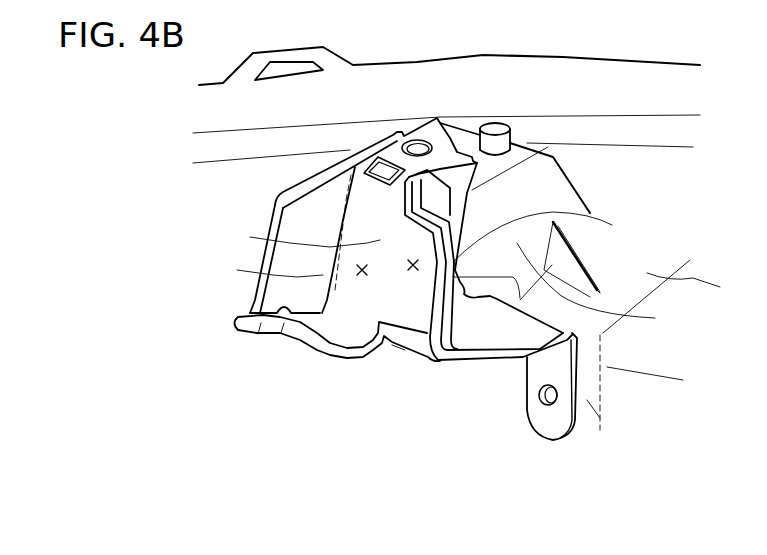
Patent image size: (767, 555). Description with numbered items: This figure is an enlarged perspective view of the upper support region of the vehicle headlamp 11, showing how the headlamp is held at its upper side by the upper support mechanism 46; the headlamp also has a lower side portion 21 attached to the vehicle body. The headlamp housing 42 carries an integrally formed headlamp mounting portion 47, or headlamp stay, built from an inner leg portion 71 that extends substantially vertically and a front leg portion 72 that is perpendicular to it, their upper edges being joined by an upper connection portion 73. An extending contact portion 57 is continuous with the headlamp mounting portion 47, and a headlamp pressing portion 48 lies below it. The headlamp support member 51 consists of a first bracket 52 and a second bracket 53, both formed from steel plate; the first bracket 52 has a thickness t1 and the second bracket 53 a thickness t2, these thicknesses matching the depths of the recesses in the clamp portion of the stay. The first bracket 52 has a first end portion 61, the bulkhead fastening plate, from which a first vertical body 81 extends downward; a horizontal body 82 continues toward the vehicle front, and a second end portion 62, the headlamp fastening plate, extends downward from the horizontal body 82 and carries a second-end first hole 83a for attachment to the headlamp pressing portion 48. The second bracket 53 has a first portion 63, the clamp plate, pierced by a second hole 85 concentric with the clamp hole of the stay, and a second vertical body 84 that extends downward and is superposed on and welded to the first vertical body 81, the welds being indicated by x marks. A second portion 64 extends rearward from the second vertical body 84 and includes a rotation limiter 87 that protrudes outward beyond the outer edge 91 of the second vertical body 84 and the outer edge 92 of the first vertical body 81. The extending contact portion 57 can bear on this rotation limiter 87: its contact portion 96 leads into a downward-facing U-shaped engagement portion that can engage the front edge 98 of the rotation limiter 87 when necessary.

The vehicle headlamp 11 is at (170, 203).
The lower side portion 21 is at (551, 0).
The headlamp housing 42 is at (697, 0).
The upper support mechanism 46 is at (400, 107).
The headlamp mounting portion 47 is at (563, 195).
The headlamp pressing portion 48 is at (587, 400).
The headlamp support member 51 is at (398, 249).
The first bracket 52 is at (424, 335).
The second bracket 53 is at (392, 345).
The extending contact portion 57 is at (307, 213).
The first end portion 61 is at (470, 190).
The second end portion 62 is at (593, 380).
The first portion 63 is at (377, 116).
The second portion 64 is at (331, 337).
The inner leg portion 71 is at (597, 288).
The front leg portion 72 is at (574, 174).
The upper connection portion 73 is at (465, 132).
The first vertical body 81 is at (570, 237).
The horizontal body 82 is at (523, 327).
The second-end first hole 83a is at (557, 397).
The second vertical body 84 is at (250, 237).
The second hole 85 is at (417, 140).
The rotation limiter 87 is at (242, 316).
The outer edge 91 is at (237, 270).
The outer edge 92 is at (346, 206).
The contact portion 96 is at (260, 323).
The front edge 98 is at (283, 323).
The thickness of first bracket t1 is at (485, 323).
The thickness of second bracket t2 is at (340, 327).